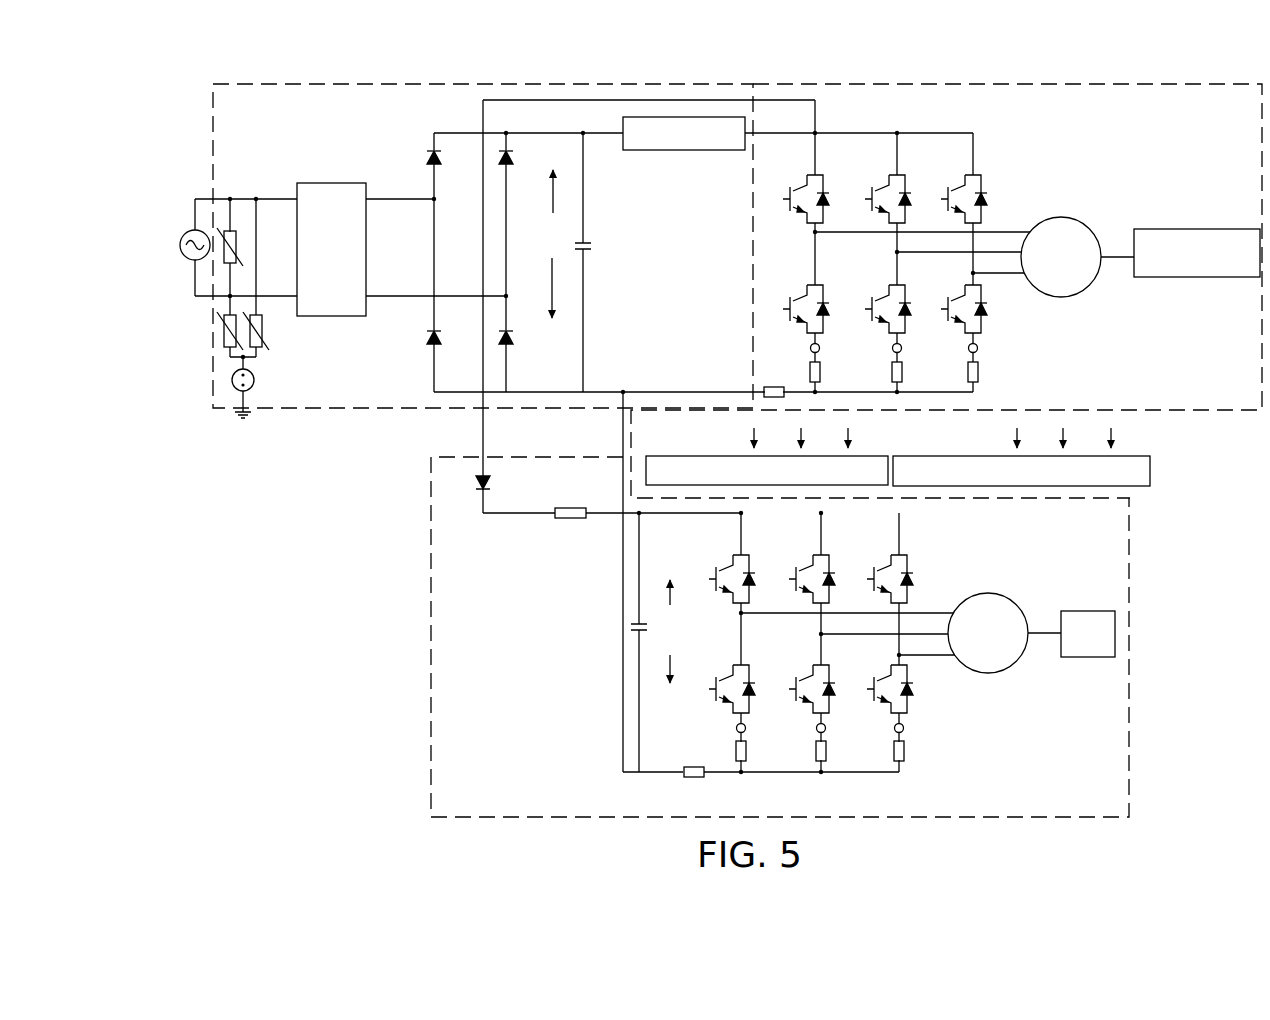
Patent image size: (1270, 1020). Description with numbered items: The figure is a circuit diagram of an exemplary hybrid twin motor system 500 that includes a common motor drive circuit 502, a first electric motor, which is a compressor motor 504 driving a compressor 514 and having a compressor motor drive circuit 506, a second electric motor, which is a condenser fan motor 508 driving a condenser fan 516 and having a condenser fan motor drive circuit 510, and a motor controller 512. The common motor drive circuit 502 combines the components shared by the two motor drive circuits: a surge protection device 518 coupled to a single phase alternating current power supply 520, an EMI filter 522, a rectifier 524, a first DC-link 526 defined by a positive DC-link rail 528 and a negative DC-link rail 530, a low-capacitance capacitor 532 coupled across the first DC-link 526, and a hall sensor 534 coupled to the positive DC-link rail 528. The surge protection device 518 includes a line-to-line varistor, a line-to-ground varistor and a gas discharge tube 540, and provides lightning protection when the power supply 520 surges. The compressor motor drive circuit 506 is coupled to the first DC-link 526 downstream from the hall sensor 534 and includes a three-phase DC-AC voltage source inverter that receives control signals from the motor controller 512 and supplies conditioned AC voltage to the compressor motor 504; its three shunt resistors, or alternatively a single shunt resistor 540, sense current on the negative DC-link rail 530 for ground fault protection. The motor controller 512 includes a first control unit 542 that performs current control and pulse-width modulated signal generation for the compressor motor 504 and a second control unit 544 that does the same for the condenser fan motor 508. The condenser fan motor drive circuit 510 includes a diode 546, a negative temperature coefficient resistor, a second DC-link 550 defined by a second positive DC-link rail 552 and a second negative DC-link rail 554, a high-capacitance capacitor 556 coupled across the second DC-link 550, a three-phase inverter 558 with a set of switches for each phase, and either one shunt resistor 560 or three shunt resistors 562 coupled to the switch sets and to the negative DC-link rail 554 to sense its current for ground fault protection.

The hybrid twin motor system 500 is at (352, 20).
The common motor drive circuit 502 is at (297, 82).
The compressor motor 504 is at (1062, 217).
The compressor motor drive circuit 506 is at (918, 82).
The condenser fan motor 508 is at (982, 593).
The condenser fan motor drive circuit 510 is at (431, 586).
The motor controller 512 is at (921, 436).
The compressor 514 is at (1176, 229).
The condenser fan 516 is at (1066, 611).
The surge protection device 518 is at (232, 160).
The power supply 520 is at (182, 235).
The EMI filter 522 is at (316, 183).
The rectifier 524 is at (456, 120).
The first DC-link 526 is at (551, 244).
The positive DC-link rail 528 is at (546, 133).
The negative DC-link rail 530 is at (641, 392).
The low-capacitance capacitor 532 is at (590, 245).
The hall sensor 534 is at (662, 152).
The gas discharge tube / shunt resistor 540 is at (781, 371).
The first control unit 542 is at (704, 456).
The second control unit 544 is at (1150, 470).
The diode 546 is at (490, 482).
The second DC-link 550 is at (677, 631).
The second positive DC-link rail 552 is at (724, 522).
The second negative DC-link rail 554 is at (663, 773).
The high-capacitance capacitor 556 is at (633, 625).
The inverter 558 is at (837, 641).
The shunt resistor 560 is at (689, 766).
The shunt resistors 562 is at (747, 750).